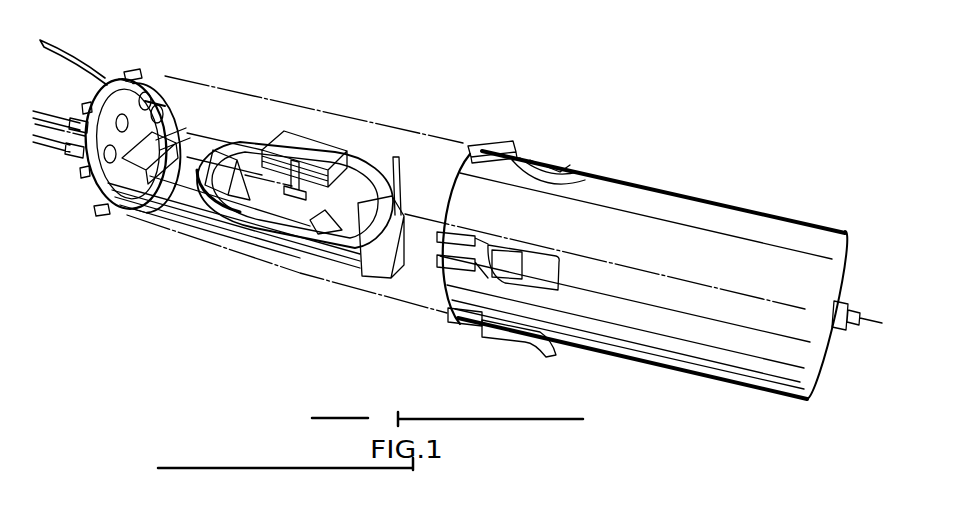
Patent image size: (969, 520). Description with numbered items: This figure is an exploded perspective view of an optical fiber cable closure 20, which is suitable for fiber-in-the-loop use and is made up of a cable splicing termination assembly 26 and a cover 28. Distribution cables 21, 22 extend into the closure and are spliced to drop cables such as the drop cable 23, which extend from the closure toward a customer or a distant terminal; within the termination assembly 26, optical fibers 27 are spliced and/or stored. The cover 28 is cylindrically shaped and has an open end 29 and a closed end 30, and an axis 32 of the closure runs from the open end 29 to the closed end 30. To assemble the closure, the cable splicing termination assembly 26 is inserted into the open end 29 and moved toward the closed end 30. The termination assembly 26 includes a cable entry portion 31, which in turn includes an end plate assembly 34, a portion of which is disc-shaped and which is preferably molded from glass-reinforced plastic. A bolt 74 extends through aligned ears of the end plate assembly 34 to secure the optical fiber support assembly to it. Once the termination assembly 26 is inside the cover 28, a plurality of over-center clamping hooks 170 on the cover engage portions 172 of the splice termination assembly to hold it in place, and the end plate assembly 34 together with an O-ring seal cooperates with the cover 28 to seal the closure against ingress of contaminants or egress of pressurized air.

The optical fiber cable closure 20 is at (461, 339).
The distribution cable 21 is at (56, 108).
The distribution cable 22 is at (62, 150).
The drop cable 23 is at (61, 44).
The cable splicing termination assembly 26 is at (249, 262).
The optical fibers 27 is at (362, 170).
The cover 28 is at (664, 183).
The open end 29 is at (430, 278).
The closed end 30 is at (843, 248).
The cable entry portion 31 is at (115, 153).
The axis 32 is at (862, 320).
The end plate assembly 34 is at (113, 78).
The bolt 74 is at (100, 220).
The over-center clamping hooks 170 is at (570, 170).
The portions of the splice termination assembly 172 is at (131, 76).